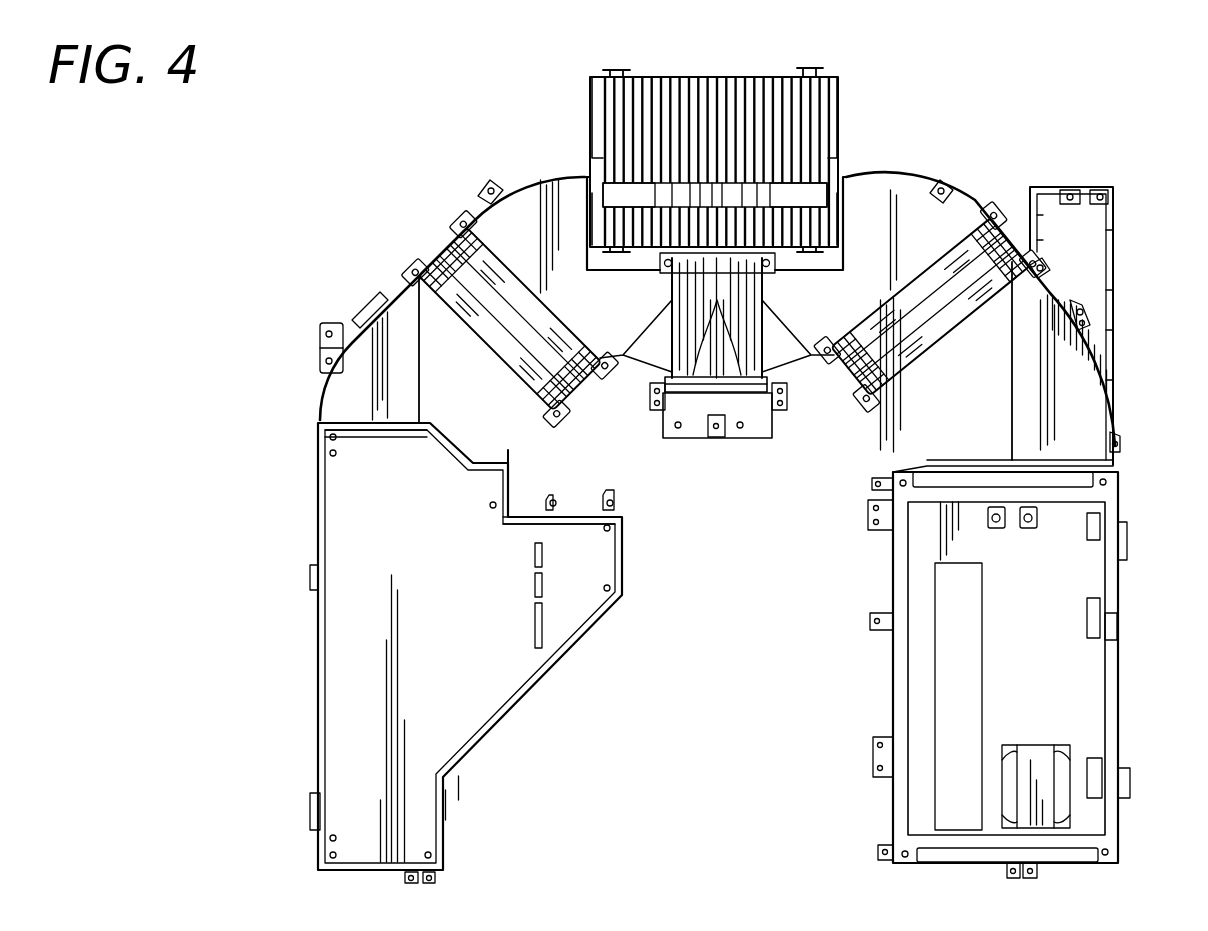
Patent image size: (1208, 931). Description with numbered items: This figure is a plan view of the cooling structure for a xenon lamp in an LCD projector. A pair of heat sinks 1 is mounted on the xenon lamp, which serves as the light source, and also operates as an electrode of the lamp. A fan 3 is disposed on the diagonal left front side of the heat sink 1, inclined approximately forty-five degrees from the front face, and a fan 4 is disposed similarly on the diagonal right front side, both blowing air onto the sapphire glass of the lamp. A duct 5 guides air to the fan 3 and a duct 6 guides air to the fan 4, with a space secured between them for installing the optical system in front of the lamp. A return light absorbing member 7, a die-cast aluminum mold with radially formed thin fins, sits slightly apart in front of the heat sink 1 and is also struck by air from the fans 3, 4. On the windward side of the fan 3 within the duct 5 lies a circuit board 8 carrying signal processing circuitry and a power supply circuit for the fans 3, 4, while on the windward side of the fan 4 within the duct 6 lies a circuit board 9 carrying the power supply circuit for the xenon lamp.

The heat sink 1 is at (810, 104).
The fan 3 is at (456, 230).
The fan 4 is at (978, 223).
The duct 5 is at (317, 640).
The duct 6 is at (1120, 668).
The return light absorbing member 7 is at (765, 352).
The circuit board 8 is at (425, 700).
The circuit board 9 is at (1060, 707).